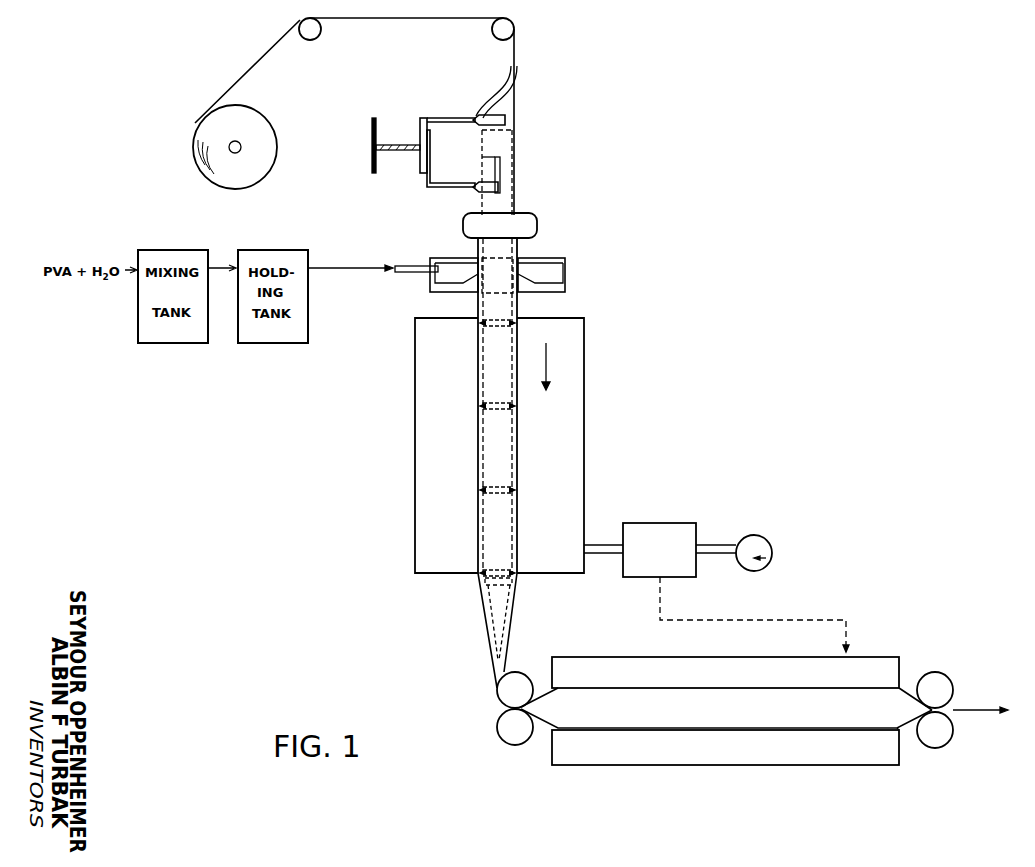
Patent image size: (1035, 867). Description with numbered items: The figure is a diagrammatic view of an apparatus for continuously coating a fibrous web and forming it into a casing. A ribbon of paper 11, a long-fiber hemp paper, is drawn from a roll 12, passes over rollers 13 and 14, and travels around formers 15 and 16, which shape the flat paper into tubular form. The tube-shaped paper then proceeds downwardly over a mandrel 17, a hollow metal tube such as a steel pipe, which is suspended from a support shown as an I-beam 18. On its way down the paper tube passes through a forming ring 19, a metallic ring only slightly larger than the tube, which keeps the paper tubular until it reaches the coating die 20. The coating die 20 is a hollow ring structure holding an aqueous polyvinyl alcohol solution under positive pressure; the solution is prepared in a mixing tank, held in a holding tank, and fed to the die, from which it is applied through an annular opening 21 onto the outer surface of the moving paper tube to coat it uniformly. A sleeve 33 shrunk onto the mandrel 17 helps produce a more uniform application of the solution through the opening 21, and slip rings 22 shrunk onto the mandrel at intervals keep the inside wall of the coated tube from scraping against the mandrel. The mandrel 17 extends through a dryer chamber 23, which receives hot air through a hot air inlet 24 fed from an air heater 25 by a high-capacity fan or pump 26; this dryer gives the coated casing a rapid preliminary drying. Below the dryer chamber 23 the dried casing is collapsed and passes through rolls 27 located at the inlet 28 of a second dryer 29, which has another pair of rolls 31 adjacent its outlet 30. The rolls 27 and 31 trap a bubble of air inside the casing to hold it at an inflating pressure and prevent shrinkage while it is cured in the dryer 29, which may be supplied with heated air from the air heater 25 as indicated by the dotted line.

The ribbon of paper 11 is at (400, 20).
The roll 12 is at (262, 177).
The roller 13 is at (316, 38).
The roller 14 is at (500, 41).
The former 15 is at (519, 117).
The former 16 is at (490, 160).
The mandrel 17 is at (490, 372).
The I-beam 18 is at (373, 176).
The forming ring 19 is at (536, 215).
The coating die 20 is at (565, 272).
The annular opening 21 is at (457, 264).
The slip ring 22 is at (478, 323).
The dryer chamber 23 is at (415, 440).
The hot air inlet 24 is at (597, 556).
The air heater 25 is at (670, 523).
The fan or pump 26 is at (752, 536).
The rolls 27 is at (512, 672).
The inlet 28 is at (554, 731).
The dryer 29 is at (740, 765).
The outlet 30 is at (898, 735).
The rolls 31 is at (950, 683).
The sleeve 33 is at (517, 293).